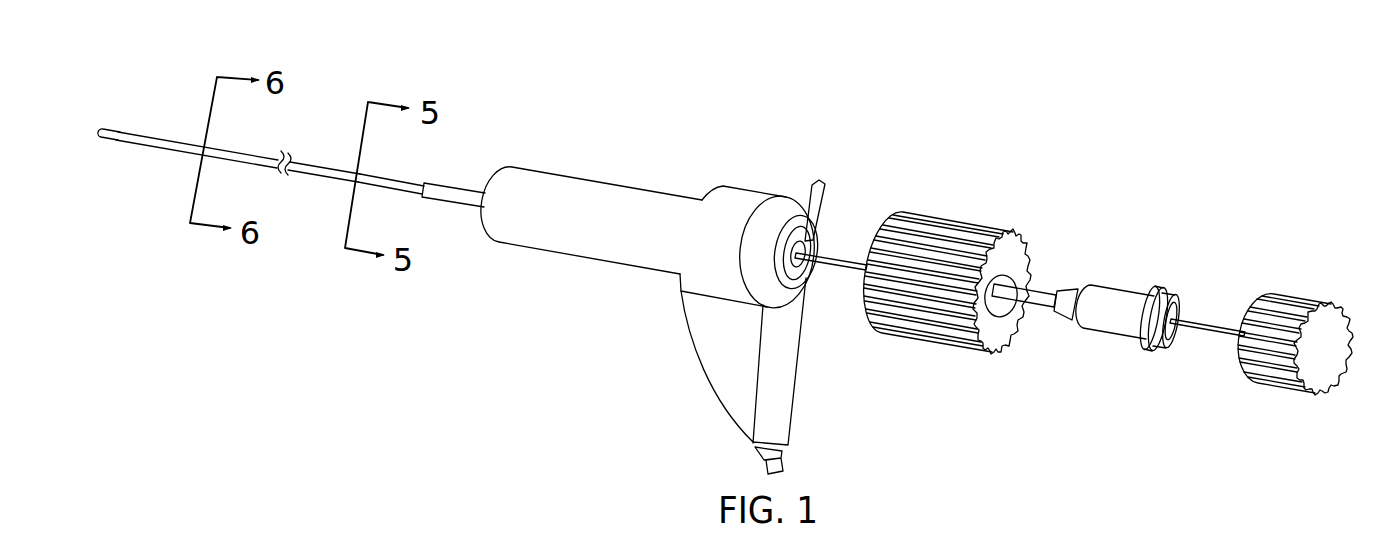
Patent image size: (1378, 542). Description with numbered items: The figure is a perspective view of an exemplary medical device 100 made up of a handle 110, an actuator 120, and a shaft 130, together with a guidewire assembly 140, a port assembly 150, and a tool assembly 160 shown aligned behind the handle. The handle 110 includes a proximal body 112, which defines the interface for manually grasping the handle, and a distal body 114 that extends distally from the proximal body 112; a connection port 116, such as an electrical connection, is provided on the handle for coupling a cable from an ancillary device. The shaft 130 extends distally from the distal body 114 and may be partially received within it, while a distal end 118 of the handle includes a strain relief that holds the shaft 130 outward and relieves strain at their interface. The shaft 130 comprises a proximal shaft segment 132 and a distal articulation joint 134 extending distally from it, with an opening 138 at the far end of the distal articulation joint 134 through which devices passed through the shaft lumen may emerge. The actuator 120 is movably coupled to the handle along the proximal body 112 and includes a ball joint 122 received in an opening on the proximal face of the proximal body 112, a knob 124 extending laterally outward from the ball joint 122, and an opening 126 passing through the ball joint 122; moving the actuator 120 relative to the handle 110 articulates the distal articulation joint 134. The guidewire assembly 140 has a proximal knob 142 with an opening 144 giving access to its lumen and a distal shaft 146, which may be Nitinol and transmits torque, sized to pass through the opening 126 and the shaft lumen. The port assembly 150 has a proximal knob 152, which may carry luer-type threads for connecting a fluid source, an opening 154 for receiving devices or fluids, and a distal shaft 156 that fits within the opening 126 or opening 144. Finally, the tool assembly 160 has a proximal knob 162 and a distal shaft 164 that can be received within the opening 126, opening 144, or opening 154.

The medical device 100 is at (1135, 182).
The handle 110 is at (573, 275).
The proximal body 112 is at (713, 352).
The distal body 114 is at (595, 197).
The connection port 116 is at (757, 452).
The distal end 118 is at (452, 178).
The actuator 120 is at (800, 183).
The ball joint 122 is at (788, 265).
The knob 124 is at (815, 180).
The opening 126 is at (815, 262).
The shaft 130 is at (297, 252).
The proximal shaft segment 132 is at (422, 210).
The distal articulation joint 134 is at (135, 150).
The opening 138 is at (98, 125).
The guidewire assembly 140 is at (908, 358).
The proximal knob 142 is at (940, 232).
The opening 144 is at (997, 302).
The distal shaft 146 is at (838, 253).
The port assembly 150 is at (1102, 360).
The proximal knob 152 is at (1160, 295).
The opening 154 is at (1172, 330).
The distal shaft 156 is at (1042, 298).
The tool assembly 160 is at (1277, 405).
The proximal knob 162 is at (1280, 318).
The distal shaft 164 is at (1208, 320).